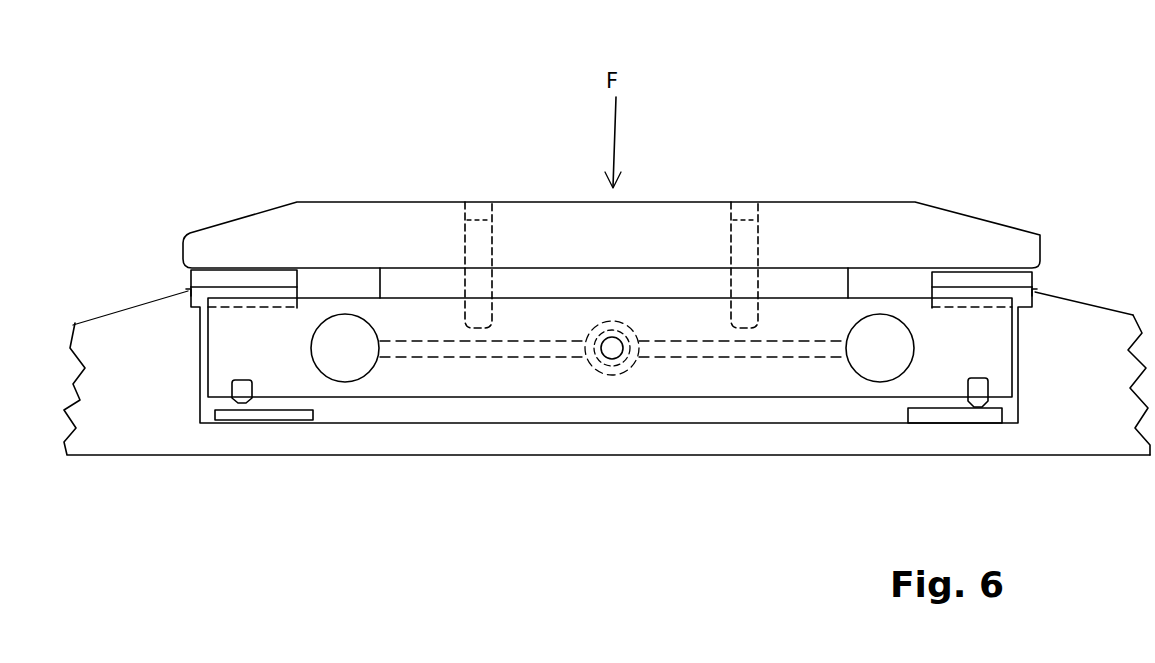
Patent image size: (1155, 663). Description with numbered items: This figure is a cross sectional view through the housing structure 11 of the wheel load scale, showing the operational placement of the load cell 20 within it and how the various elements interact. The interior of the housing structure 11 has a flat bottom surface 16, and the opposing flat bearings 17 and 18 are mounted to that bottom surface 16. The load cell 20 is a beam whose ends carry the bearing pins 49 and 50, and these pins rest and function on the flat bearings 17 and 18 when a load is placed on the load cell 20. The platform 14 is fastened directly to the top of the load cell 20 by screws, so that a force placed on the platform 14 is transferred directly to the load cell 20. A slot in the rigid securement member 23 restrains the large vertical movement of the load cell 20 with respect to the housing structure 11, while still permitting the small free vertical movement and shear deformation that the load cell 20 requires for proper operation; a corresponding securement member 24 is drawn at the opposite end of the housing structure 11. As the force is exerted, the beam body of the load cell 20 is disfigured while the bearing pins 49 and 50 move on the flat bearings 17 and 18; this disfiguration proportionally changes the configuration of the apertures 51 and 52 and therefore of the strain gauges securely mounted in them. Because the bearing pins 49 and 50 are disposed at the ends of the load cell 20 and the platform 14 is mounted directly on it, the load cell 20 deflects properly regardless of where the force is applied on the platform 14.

The housing structure 11 is at (145, 440).
The platform 14 is at (412, 207).
The flat bottom surface 16 is at (618, 418).
The flat bearing 17 is at (950, 417).
The flat bearing 18 is at (307, 415).
The load cell 20 is at (980, 358).
The rigid securement member 23 is at (1015, 280).
The left mounting block 24 is at (215, 277).
The bearing pin 49 is at (240, 400).
The bearing pin 50 is at (980, 398).
The aperture 51 is at (355, 367).
The aperture 52 is at (882, 362).